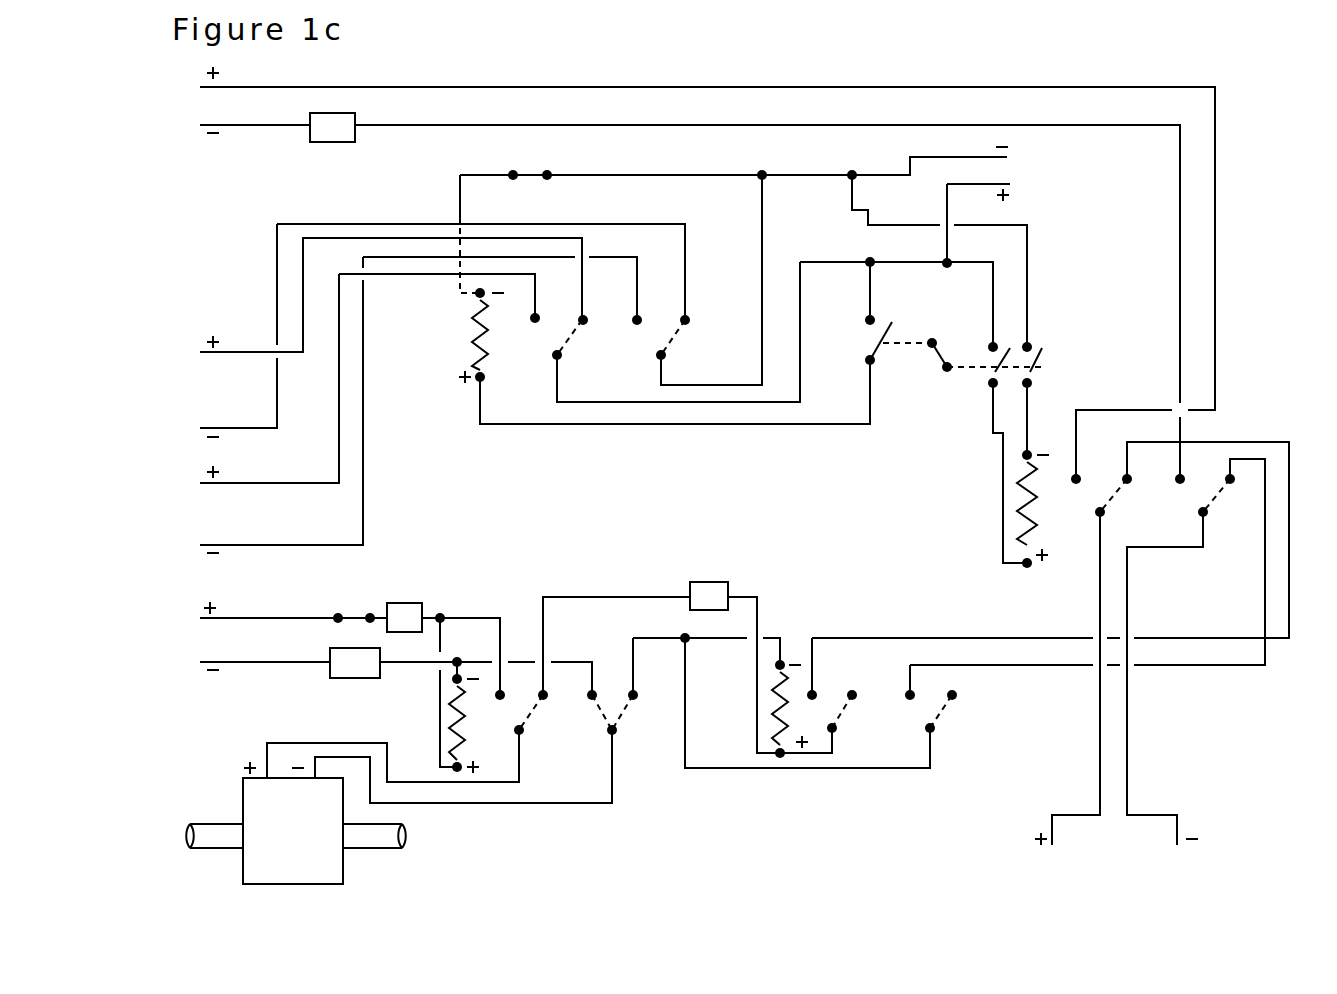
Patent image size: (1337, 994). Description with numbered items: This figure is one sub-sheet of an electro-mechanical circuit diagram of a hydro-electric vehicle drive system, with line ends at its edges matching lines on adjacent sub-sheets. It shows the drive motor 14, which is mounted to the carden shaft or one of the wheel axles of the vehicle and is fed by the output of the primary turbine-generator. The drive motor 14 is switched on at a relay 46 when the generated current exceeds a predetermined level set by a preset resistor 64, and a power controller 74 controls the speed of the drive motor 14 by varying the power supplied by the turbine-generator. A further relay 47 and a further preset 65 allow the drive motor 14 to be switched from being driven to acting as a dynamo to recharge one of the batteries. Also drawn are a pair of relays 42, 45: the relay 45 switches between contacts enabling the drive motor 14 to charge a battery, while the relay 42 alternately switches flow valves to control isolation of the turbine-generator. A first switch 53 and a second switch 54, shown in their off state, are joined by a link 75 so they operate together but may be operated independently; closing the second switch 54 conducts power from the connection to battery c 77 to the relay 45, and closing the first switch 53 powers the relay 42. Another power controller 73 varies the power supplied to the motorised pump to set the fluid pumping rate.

The drive motor 2 14 is at (303, 888).
The relay 9 42 is at (467, 332).
The relay 11 45 is at (1017, 502).
The relay 12 46 is at (487, 753).
The relay 13 47 is at (847, 720).
The switch s1 53 is at (895, 328).
The switch s2 54 is at (1050, 363).
The preset 3 64 is at (420, 600).
The preset 4 65 is at (718, 577).
The power controller pc 1 73 is at (323, 145).
The power controller pc 2 74 is at (355, 682).
The link 1 75 is at (935, 357).
The connection to battery c 77 is at (1017, 173).